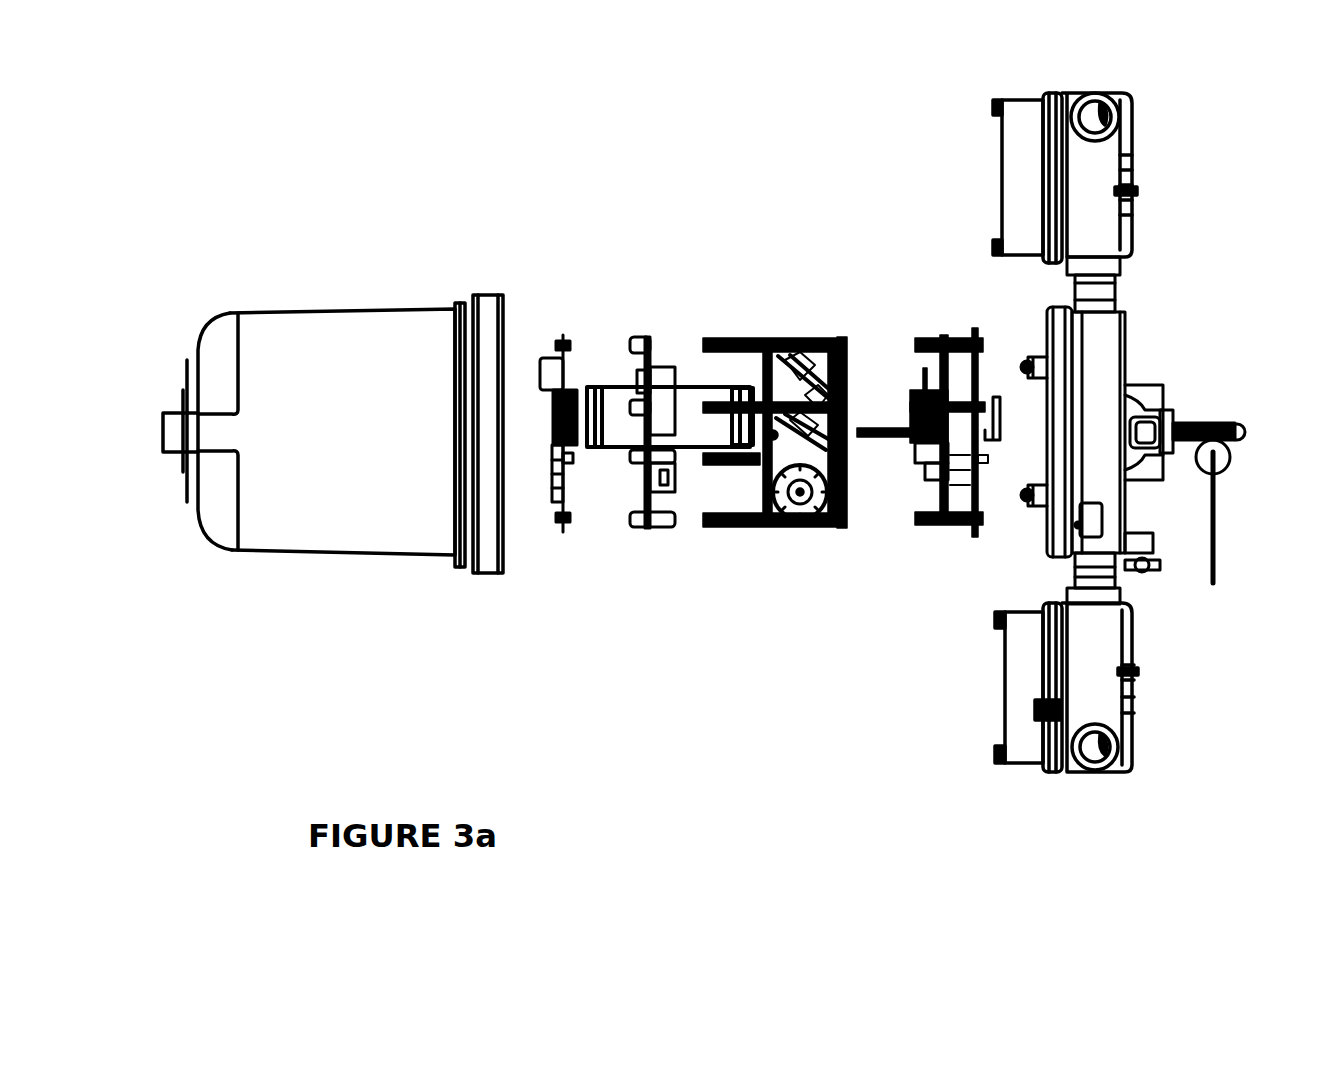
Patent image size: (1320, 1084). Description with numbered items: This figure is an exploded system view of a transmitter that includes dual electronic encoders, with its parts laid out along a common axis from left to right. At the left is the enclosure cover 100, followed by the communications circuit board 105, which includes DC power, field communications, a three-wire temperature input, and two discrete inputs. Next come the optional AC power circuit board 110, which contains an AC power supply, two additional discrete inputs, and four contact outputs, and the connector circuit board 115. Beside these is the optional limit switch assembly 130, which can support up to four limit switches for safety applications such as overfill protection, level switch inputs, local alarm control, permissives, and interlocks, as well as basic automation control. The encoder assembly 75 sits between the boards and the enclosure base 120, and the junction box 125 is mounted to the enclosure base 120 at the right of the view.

The enclosure cover 100 is at (305, 553).
The communications circuit board 105 is at (565, 333).
The AC power circuit board 110 is at (667, 527).
The connector circuit board 115 is at (630, 385).
The limit switch assembly 130 is at (753, 348).
The encoder assembly 75 is at (955, 527).
The enclosure base 120 is at (1127, 373).
The junction box 125 is at (1052, 770).